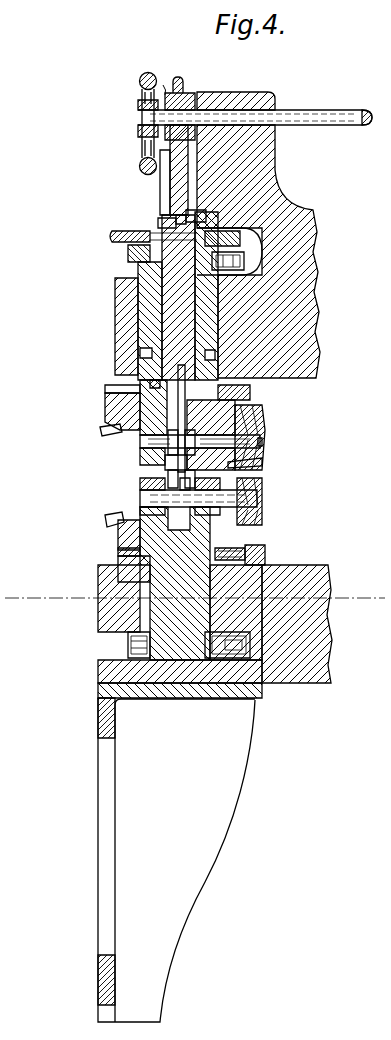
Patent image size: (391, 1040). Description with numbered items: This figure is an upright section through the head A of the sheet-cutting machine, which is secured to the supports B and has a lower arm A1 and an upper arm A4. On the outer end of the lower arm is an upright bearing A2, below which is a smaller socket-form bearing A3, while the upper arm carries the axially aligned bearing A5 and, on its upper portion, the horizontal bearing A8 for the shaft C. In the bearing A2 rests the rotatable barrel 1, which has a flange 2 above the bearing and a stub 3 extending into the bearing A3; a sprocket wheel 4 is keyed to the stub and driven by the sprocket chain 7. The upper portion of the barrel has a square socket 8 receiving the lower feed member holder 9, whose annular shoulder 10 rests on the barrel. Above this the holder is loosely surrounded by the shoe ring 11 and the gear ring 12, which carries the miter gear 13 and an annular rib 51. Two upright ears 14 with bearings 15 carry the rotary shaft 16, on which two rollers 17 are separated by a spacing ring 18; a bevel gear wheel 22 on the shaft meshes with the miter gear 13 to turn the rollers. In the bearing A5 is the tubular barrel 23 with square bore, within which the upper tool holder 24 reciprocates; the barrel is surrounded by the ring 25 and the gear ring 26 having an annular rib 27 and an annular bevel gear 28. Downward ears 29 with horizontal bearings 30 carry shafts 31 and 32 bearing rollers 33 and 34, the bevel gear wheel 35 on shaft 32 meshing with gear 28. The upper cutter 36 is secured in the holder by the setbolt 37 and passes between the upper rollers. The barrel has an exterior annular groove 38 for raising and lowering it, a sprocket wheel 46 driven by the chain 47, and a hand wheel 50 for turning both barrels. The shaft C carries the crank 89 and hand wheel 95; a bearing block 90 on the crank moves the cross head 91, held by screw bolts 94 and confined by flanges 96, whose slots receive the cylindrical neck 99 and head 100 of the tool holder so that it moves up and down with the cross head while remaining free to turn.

The barrel 1 is at (148, 625).
The flange 2 is at (118, 563).
The stub 3 is at (198, 660).
The sprocket wheel 4 is at (130, 648).
The sprocket chain 7 is at (118, 664).
The socket 8 is at (130, 580).
The lower feed member holder 9 is at (172, 589).
The annular shoulder 10 is at (266, 563).
The shoe ring 11 is at (247, 555).
The gear ring 12 is at (118, 530).
The miter gear 13 is at (112, 520).
The upright ears 14 is at (142, 481).
The bearing 15 is at (142, 508).
The rotary shaft 16 is at (160, 498).
The rollers 17 is at (170, 478).
The spacing ring 18 is at (190, 485).
The bevel gear wheel 22 is at (262, 484).
The barrel 23 is at (150, 330).
The upper tool holder 24 is at (178, 289).
The ring 25 is at (140, 387).
The gear ring 26 is at (105, 394).
The annular rib 27 is at (112, 408).
The annular bevel gear 28 is at (108, 436).
The downward directed ears 29 is at (142, 455).
The horizontal bearing 30 is at (170, 436).
The shaft 31 is at (150, 442).
The shaft 32 is at (262, 442).
The roller 33 is at (176, 468).
The roller 34 is at (262, 462).
The bevel gear wheel 35 is at (262, 424).
The upper cutter 36 is at (250, 398).
The setbolt 37 is at (150, 384).
The annular groove 38 is at (142, 352).
The sprocket wheel 46 is at (128, 256).
The sprocket chain 47 is at (229, 254).
The hand wheel 50 is at (110, 235).
The annular rib 51 is at (118, 552).
The crank 89 is at (138, 116).
The bearing block 90 is at (190, 95).
The cross head 91 is at (179, 181).
The screw bolts 94 is at (179, 78).
The hand wheel 95 is at (150, 70).
The upright flanges 96 is at (186, 214).
The cylindrical neck 99 is at (176, 219).
The cylindrical head 100 is at (158, 222).
The head A is at (98, 204).
The lower arm A1 is at (195, 590).
The upright bearing A2 is at (136, 606).
The socket-form bearing A3 is at (178, 683).
The upper arm A4 is at (318, 320).
The bearing A5 is at (140, 314).
The horizontal bearing A8 is at (236, 106).
The supports B is at (194, 860).
The shaft C is at (326, 94).